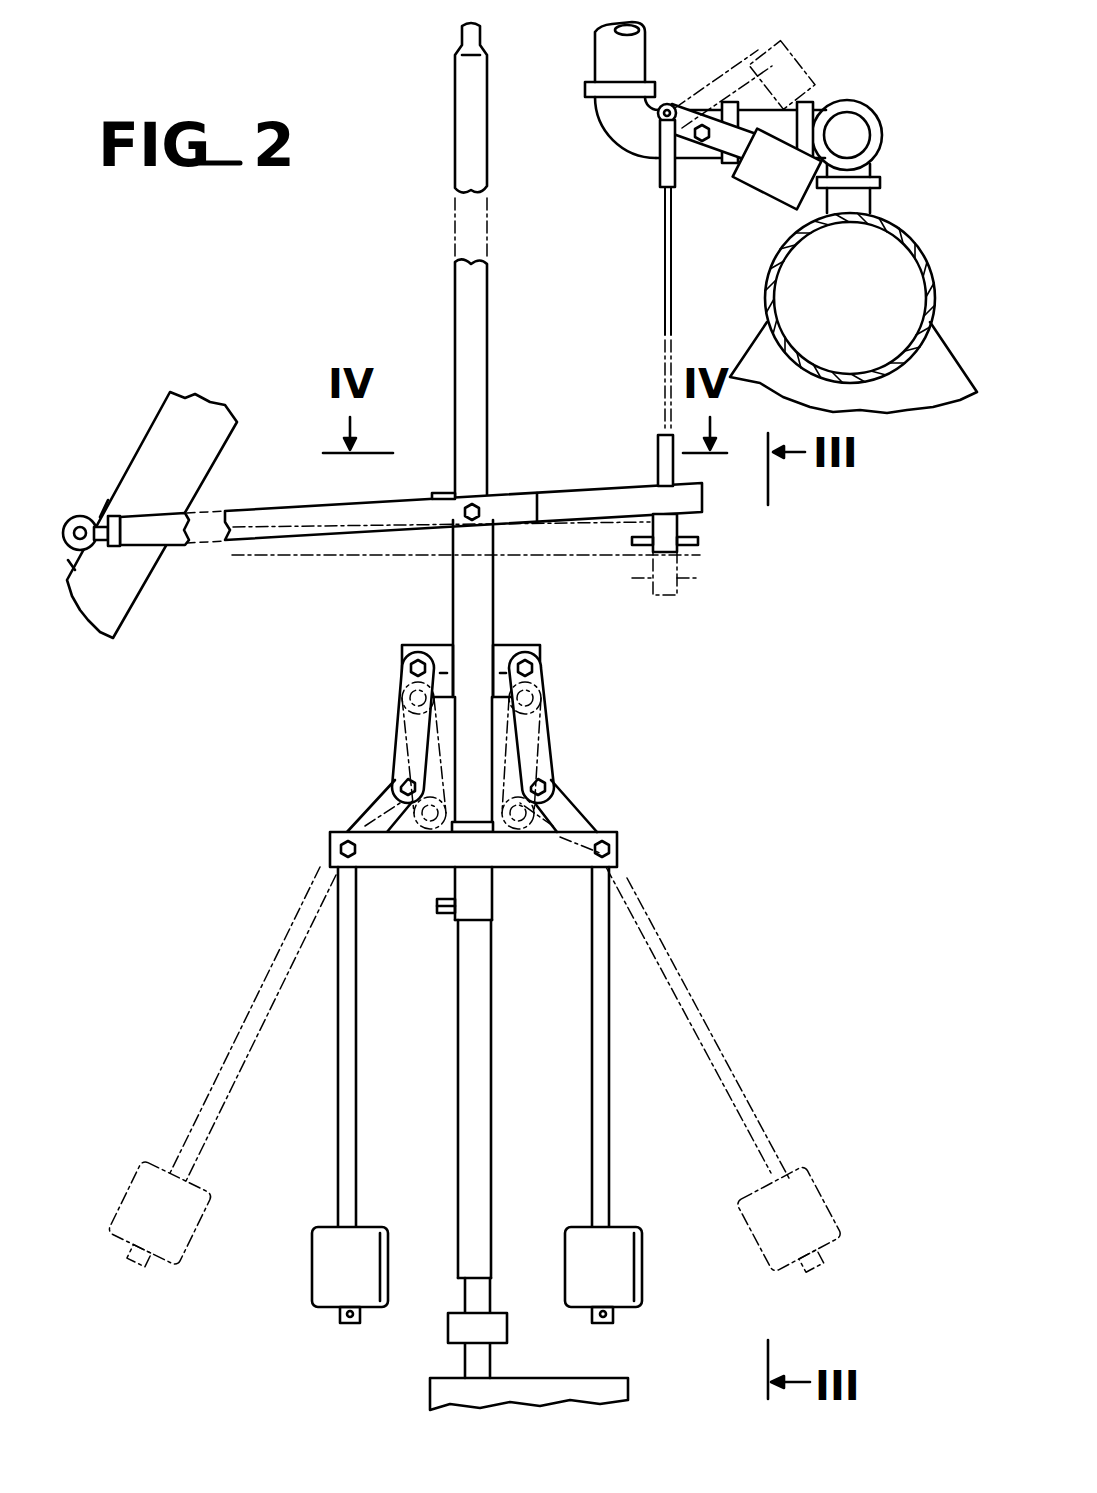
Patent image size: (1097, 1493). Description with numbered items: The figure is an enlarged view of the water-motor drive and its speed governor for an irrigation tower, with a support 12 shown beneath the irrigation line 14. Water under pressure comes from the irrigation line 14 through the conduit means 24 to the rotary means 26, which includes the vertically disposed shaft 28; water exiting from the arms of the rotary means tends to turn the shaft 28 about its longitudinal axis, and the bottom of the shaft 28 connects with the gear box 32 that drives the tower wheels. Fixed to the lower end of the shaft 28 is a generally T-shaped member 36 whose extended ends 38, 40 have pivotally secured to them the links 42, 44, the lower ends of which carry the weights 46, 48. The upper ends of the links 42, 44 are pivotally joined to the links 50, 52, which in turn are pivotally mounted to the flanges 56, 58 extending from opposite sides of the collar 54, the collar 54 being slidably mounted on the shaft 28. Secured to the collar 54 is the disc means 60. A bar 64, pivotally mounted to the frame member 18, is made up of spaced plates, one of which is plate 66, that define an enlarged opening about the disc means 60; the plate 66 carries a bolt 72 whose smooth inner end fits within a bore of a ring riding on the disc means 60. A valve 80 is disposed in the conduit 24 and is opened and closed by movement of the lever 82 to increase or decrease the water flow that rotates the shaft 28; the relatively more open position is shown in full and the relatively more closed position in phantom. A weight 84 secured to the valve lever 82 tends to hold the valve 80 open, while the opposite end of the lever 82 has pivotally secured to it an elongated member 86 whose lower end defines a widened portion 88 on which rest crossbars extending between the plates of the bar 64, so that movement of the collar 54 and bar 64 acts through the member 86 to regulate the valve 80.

The support base 12 is at (957, 320).
The irrigation line 14 is at (916, 222).
The frame member 18 is at (150, 432).
The conduit means 24 is at (655, 49).
The rotary means 26 is at (500, 159).
The shaft 28 is at (488, 368).
The gear box 32 is at (525, 1378).
The T-shaped member 36 is at (508, 900).
The extended end 38 is at (330, 838).
The extended end 40 is at (617, 840).
The link 42 is at (357, 1012).
The link 44 is at (580, 1004).
The weight 46 is at (335, 1260).
The weight 48 is at (622, 1255).
The link 50 is at (395, 735).
The link 52 is at (548, 735).
The collar 54 is at (507, 592).
The flange 56 is at (432, 645).
The flange 58 is at (542, 652).
The disc means 60 is at (436, 492).
The bar 64 is at (252, 555).
The plate 66 is at (315, 522).
The bolt 72 is at (483, 505).
The valve 80 is at (703, 124).
The lever 82 is at (722, 143).
The weight 84 is at (758, 181).
The elongated member 86 is at (652, 269).
The widened portion 88 is at (677, 527).